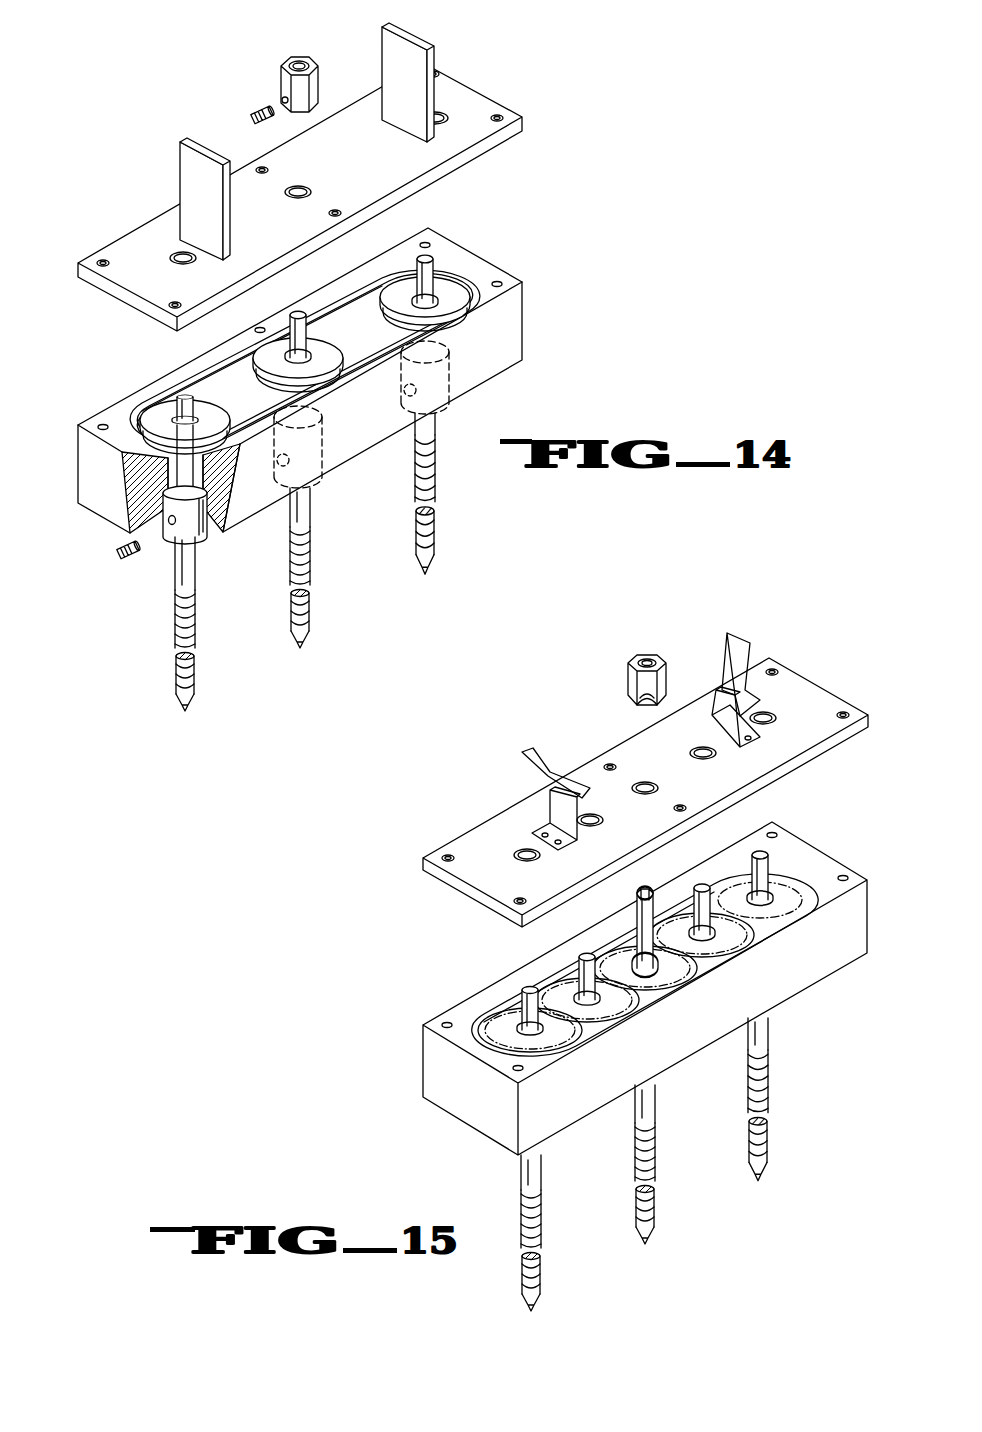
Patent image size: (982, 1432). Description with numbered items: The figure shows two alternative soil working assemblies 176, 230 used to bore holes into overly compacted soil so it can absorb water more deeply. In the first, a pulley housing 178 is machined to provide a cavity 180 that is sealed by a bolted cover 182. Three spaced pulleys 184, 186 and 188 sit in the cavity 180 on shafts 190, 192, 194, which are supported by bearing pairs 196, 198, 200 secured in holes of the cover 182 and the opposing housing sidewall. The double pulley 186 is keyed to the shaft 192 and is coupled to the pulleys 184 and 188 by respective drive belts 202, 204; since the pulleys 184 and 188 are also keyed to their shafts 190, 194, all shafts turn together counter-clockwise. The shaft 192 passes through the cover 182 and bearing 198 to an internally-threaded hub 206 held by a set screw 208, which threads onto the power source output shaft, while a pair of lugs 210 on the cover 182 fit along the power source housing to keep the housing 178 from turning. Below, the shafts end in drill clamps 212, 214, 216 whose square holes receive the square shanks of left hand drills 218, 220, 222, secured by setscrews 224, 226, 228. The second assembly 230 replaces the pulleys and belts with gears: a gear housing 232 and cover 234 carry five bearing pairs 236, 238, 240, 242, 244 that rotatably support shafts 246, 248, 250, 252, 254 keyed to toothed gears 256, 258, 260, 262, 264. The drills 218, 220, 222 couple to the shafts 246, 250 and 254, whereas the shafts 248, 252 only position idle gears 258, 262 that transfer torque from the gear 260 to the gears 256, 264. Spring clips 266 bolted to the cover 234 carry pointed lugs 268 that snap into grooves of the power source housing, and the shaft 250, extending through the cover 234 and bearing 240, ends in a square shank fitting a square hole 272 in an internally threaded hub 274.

In FIG. 14, the soil working assembly 176 is at (548, 260).
In FIG. 14, the pulley housing 178 is at (522, 343).
In FIG. 14, the cavity 180 is at (455, 266).
In FIG. 14, the cover 182 is at (487, 103).
In FIG. 14, the pulley 184 is at (155, 410).
In FIG. 14, the double pulley 186 is at (270, 347).
In FIG. 14, the pulley 188 is at (397, 290).
In FIG. 14, the shaft 190 is at (178, 412).
In FIG. 14, the shaft 192 is at (291, 332).
In FIG. 14, the shaft 194 is at (417, 268).
In FIG. 14, the bearing pair 196 is at (170, 259).
In FIG. 14, the bearing pair 198 is at (306, 189).
In FIG. 14, the bearing pair 200 is at (438, 112).
In FIG. 14, the drive belt 202 is at (250, 425).
In FIG. 14, the drive belt 204 is at (343, 333).
In FIG. 14, the internally-threaded hub 206 is at (318, 82).
In FIG. 14, the set screw 208 is at (250, 115).
In FIG. 14, the lugs 210 is at (403, 33).
In FIG. 14, the drill clamp 212 is at (196, 535).
In FIG. 14, the drill clamp 214 is at (323, 433).
In FIG. 14, the drill clamp 216 is at (446, 361).
In FIG. 14, the left hand drill 218 is at (196, 640).
In FIG. 15, the left hand drill 218 is at (539, 1228).
In FIG. 14, the left hand drill 220 is at (306, 590).
In FIG. 15, the left hand drill 220 is at (652, 1165).
In FIG. 14, the left hand drill 222 is at (433, 512).
In FIG. 15, the left hand drill 222 is at (766, 1105).
In FIG. 14, the setscrew 224 is at (114, 552).
In FIG. 14, the setscrew 226 is at (280, 466).
In FIG. 14, the setscrew 228 is at (403, 394).
In FIG. 15, the soil working assembly 230 is at (842, 834).
In FIG. 15, the gear housing 232 is at (797, 845).
In FIG. 15, the cover 234 is at (820, 690).
In FIG. 15, the bearing pair 236 is at (536, 860).
In FIG. 15, the bearing pair 238 is at (604, 820).
In FIG. 15, the bearing pair 240 is at (660, 788).
In FIG. 15, the bearing pair 242 is at (717, 755).
In FIG. 15, the bearing pair 244 is at (772, 713).
In FIG. 15, the shaft 246 is at (523, 1005).
In FIG. 15, the shaft 248 is at (580, 970).
In FIG. 15, the shaft 250 is at (638, 926).
In FIG. 15, the shaft 252 is at (698, 905).
In FIG. 15, the shaft 254 is at (753, 878).
In FIG. 15, the toothed gear 256 is at (545, 1042).
In FIG. 15, the idle gear 258 is at (612, 1010).
In FIG. 15, the toothed gear 260 is at (678, 975).
In FIG. 15, the idle gear 262 is at (727, 945).
In FIG. 15, the toothed gear 264 is at (793, 902).
In FIG. 15, the spring clips 266 is at (725, 654).
In FIG. 15, the pointed lugs 268 is at (578, 785).
In FIG. 15, the square hole 272 is at (645, 703).
In FIG. 15, the internally threaded hub 274 is at (647, 652).